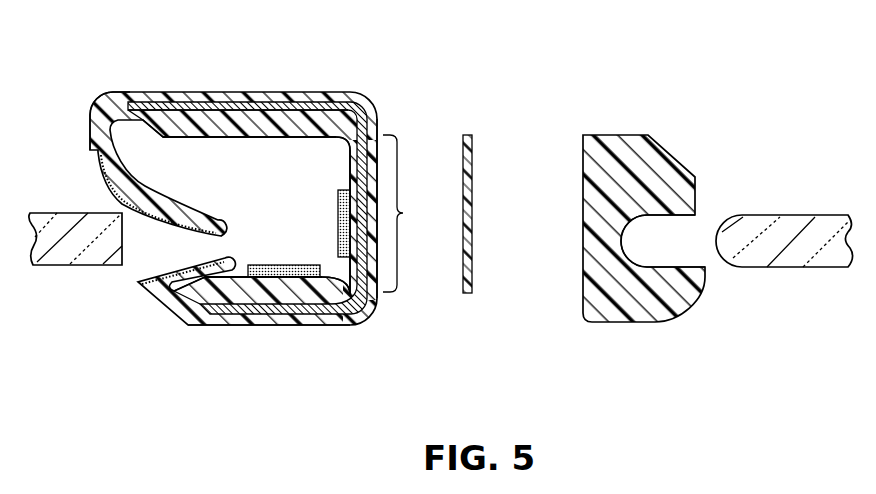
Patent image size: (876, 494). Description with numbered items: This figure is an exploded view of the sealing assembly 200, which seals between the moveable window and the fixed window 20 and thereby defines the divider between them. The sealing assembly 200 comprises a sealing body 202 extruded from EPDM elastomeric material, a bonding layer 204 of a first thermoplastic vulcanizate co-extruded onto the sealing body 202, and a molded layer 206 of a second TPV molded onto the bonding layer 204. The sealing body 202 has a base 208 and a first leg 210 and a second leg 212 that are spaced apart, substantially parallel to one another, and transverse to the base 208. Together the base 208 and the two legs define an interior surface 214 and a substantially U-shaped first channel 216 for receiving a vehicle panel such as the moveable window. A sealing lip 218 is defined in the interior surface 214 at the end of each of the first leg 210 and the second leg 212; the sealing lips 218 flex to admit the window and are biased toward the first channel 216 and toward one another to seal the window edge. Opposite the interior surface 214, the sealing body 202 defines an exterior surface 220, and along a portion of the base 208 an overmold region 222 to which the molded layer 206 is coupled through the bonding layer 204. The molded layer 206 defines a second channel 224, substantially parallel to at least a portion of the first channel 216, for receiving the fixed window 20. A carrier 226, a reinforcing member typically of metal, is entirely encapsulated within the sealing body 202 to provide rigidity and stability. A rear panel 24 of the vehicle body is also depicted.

The sealing assembly 200 is at (294, 385).
The sealing body 202 is at (110, 92).
The bonding layer 204 is at (472, 272).
The molded layer 206 is at (682, 300).
The base 208 is at (376, 260).
The first leg 210 is at (303, 96).
The second leg 212 is at (320, 326).
The interior surface 214 is at (258, 137).
The first channel 216 is at (327, 168).
The sealing lip 218 is at (155, 205).
The exterior surface 220 is at (345, 92).
The overmold region 222 is at (413, 213).
The second channel 224 is at (676, 244).
The carrier 226 is at (260, 103).
The fixed window 20 is at (770, 267).
The rear panel 24 is at (84, 265).